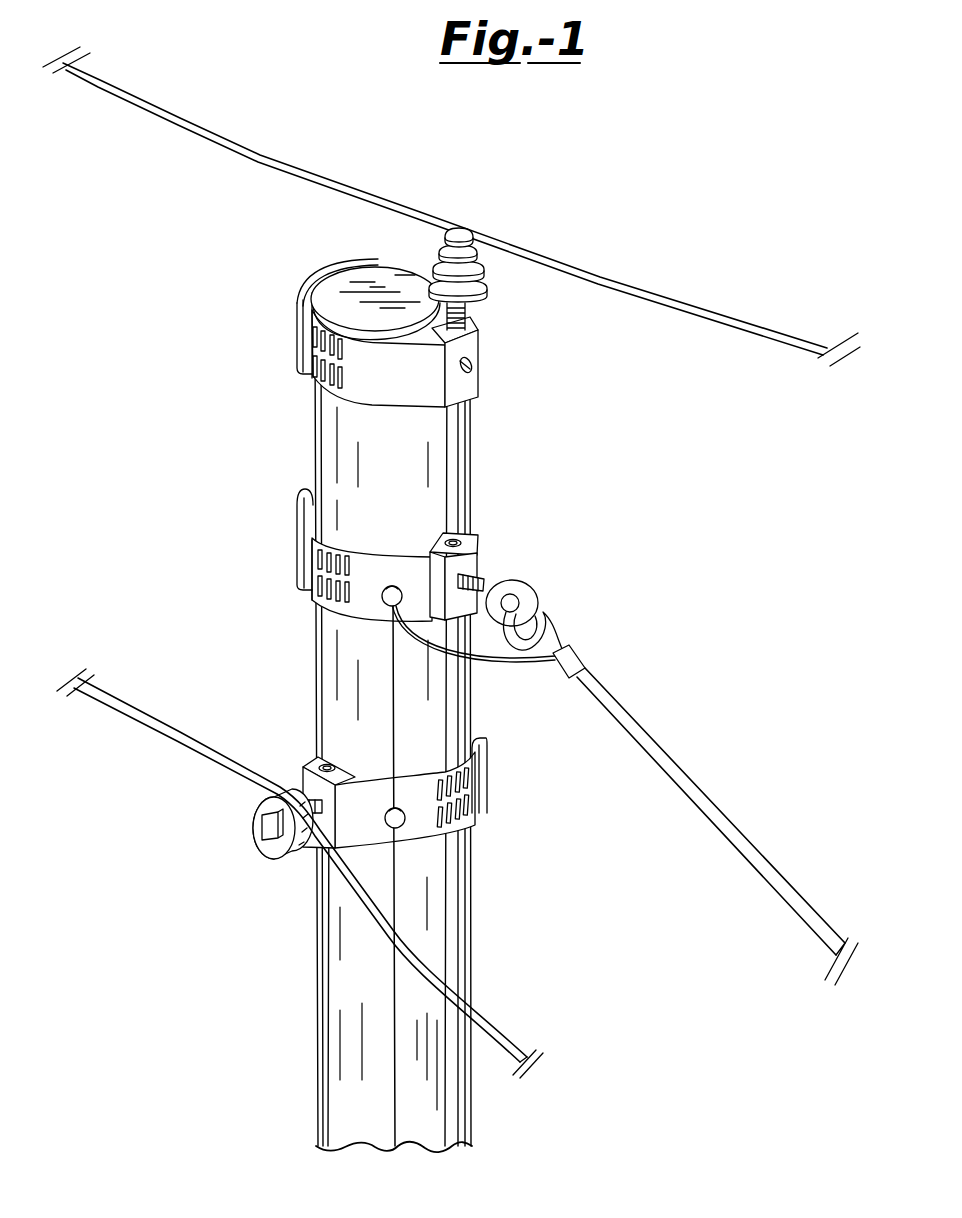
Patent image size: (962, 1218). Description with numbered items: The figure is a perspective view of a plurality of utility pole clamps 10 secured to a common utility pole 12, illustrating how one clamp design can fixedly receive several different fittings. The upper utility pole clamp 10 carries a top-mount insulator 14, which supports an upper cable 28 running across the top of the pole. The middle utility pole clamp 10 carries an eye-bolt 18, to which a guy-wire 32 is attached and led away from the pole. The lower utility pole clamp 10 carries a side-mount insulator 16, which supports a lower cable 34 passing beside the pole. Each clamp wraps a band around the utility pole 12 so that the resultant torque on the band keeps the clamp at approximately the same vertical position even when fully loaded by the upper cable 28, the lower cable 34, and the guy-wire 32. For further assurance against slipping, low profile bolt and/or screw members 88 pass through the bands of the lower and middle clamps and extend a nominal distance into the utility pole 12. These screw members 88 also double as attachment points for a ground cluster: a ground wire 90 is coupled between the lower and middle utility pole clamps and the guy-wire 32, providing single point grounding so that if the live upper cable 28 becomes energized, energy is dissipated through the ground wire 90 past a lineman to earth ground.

The utility pole clamp 10 is at (290, 327).
The utility pole 12 is at (470, 468).
The top-mount insulator 14 is at (452, 256).
The side-mount insulator 16 is at (280, 862).
The eye-bolt 18 is at (523, 597).
The upper cable 28 is at (723, 322).
The guy-wire 32 is at (673, 768).
The lower cable 34 is at (532, 1030).
The low profile bolt and/or screw member 88 is at (392, 584).
The ground wire 90 is at (393, 690).